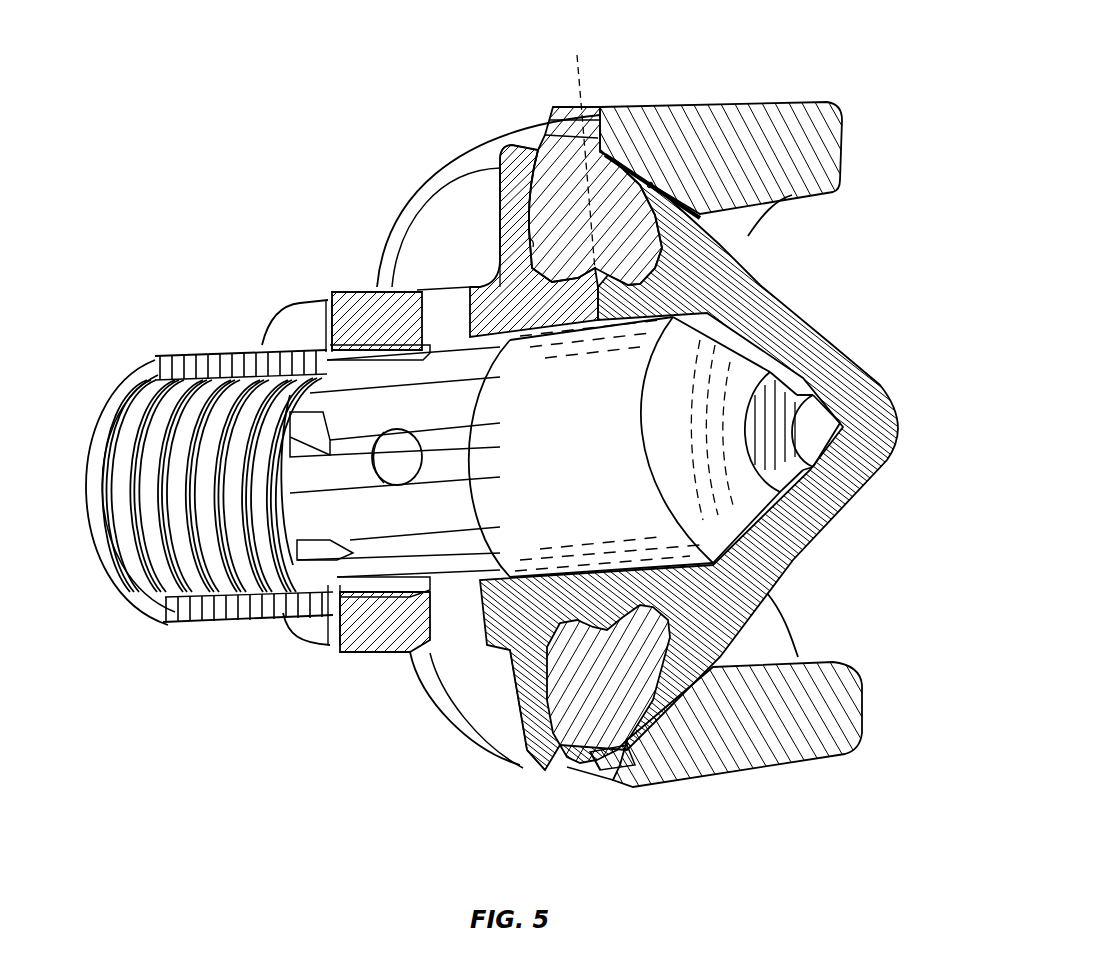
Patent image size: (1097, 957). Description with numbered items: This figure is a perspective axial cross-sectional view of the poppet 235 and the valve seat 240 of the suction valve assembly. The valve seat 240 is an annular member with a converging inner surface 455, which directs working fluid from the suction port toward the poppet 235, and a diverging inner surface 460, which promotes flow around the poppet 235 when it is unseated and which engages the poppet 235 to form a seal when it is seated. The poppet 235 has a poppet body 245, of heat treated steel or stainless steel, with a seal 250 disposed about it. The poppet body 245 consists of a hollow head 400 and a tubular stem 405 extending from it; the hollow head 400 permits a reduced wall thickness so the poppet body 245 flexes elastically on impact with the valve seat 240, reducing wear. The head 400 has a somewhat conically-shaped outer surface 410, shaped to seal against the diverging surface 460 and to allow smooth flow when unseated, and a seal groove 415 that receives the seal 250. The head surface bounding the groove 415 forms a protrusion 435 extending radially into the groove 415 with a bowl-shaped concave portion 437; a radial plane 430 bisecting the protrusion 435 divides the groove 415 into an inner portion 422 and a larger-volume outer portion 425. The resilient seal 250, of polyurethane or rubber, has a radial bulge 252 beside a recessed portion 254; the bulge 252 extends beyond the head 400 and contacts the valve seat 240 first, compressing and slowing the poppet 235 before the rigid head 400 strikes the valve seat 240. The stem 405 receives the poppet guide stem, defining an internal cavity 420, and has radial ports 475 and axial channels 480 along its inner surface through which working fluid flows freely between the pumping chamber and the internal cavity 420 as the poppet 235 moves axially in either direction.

The poppet 235 is at (373, 730).
The valve seat 240 is at (747, 770).
The poppet body 245 is at (805, 323).
The seal 250 is at (607, 708).
The bulge 252 is at (627, 760).
The recessed portion 254 is at (595, 757).
The hollow head 400 is at (483, 697).
The tubular stem 405 is at (370, 633).
The outer surface 410 is at (797, 560).
The seal groove 415 is at (523, 755).
The internal cavity 420 is at (602, 510).
The inner portion 422 is at (548, 200).
The outer portion 425 is at (515, 160).
The radial plane 430 is at (583, 78).
The protrusion 435 is at (650, 185).
The concave portion 437 is at (528, 241).
The converging inner surface 455 is at (793, 196).
The diverging inner surface 460 is at (602, 185).
The radial ports 475 is at (430, 316).
The axial channels 480 is at (447, 407).